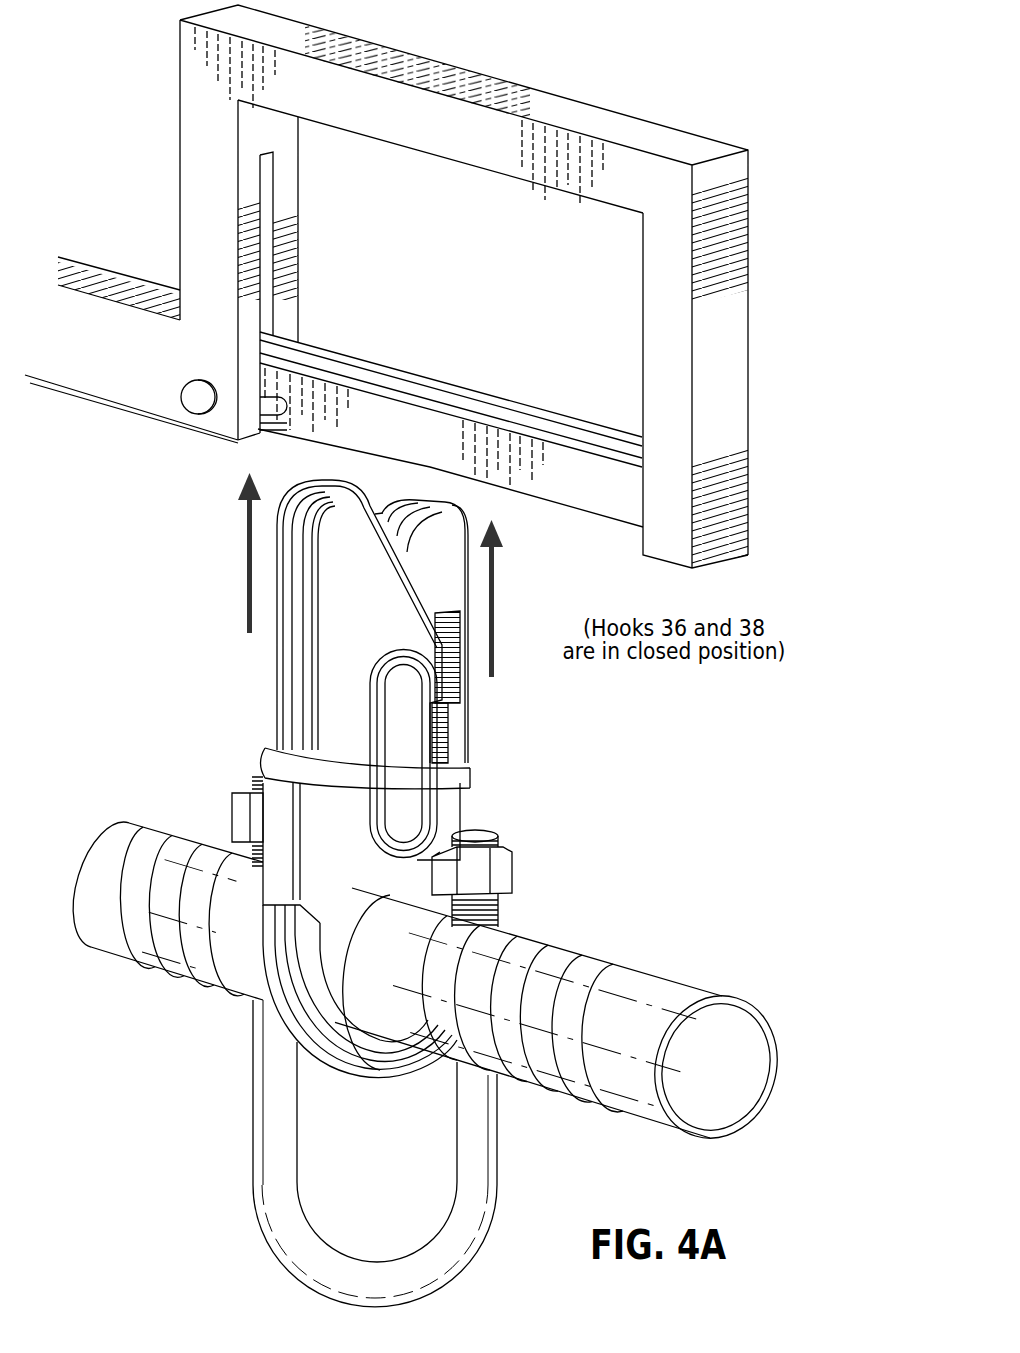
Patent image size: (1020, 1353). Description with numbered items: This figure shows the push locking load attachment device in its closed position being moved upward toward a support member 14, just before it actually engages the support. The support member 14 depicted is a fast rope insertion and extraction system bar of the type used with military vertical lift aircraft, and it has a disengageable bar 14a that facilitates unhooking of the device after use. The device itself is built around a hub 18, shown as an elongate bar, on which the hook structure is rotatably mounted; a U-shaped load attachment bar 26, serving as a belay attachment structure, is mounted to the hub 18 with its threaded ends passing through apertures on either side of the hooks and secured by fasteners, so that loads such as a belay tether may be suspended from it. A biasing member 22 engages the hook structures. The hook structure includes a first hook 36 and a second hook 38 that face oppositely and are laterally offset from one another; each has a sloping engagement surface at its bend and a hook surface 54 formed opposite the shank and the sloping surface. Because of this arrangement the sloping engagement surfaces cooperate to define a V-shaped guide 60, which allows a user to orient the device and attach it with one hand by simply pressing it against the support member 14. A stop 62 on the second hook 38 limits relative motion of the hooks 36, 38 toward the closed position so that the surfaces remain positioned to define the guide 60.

The support member 14 is at (780, 336).
The disengageable bar 14a is at (597, 497).
The hub 18 is at (682, 990).
The biasing member 22 is at (263, 753).
The U-shaped load attachment bar 26 is at (276, 1176).
The first hook 36 is at (292, 668).
The second hook 38 is at (447, 524).
The hook surface 54 is at (390, 676).
The V-shaped guide 60 is at (381, 508).
The stop 62 is at (458, 724).